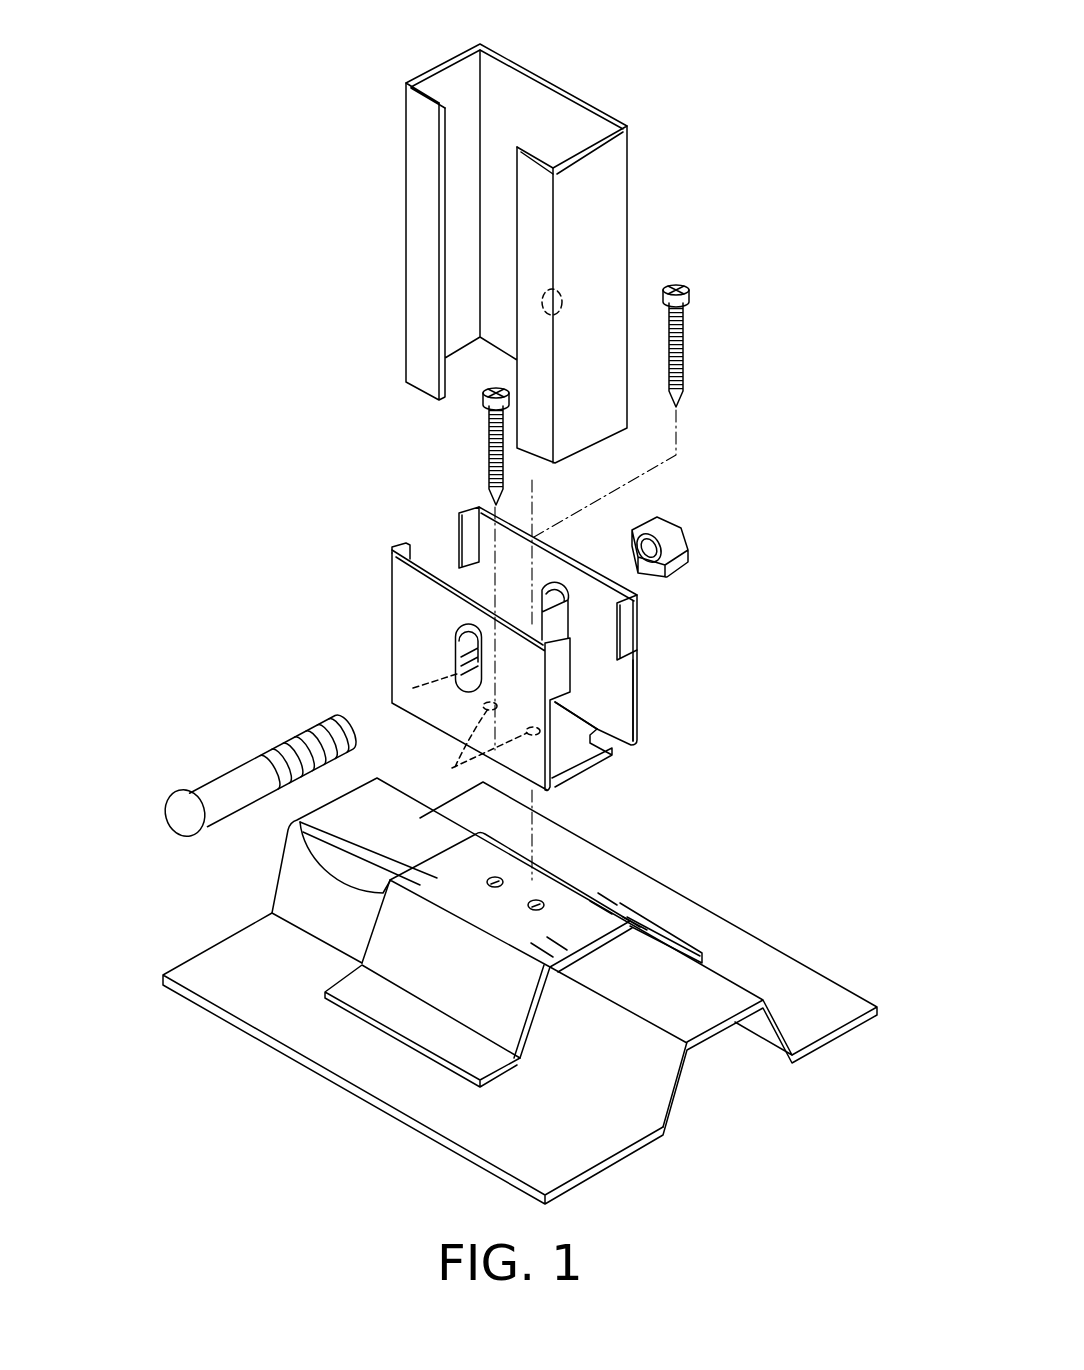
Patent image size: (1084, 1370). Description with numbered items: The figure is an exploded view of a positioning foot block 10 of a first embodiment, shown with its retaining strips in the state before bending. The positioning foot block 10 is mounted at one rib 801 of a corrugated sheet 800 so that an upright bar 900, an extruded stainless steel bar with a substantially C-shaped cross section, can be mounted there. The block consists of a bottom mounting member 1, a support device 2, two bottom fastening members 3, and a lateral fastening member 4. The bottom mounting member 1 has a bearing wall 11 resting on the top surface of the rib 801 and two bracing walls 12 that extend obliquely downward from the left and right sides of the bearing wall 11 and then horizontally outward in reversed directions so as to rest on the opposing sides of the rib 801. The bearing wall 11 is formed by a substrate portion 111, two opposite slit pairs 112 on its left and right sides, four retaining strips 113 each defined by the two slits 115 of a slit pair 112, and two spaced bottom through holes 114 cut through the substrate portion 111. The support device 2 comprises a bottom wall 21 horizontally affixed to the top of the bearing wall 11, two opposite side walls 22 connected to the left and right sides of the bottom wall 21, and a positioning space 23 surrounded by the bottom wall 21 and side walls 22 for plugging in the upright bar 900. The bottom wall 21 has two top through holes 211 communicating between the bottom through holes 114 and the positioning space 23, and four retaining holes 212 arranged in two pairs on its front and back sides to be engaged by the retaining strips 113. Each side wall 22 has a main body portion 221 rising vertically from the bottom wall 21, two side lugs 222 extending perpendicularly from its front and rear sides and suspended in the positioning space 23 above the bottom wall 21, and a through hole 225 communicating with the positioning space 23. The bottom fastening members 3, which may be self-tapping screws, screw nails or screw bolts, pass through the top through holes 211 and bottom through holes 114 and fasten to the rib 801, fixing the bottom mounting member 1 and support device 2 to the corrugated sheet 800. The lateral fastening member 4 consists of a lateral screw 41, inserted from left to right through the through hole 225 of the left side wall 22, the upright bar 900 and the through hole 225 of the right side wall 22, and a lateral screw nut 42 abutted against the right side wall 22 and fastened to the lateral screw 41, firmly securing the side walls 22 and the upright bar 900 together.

The bottom mounting member 1 is at (542, 953).
The bearing wall 11 is at (546, 850).
The substrate portion 111 is at (570, 886).
The slit pairs 112 is at (452, 824).
The retaining strips 113 is at (632, 918).
The bottom through holes 114 is at (488, 885).
The slits 115 is at (300, 820).
The bracing walls 12 is at (497, 1015).
The support device 2 is at (528, 645).
The bottom wall 21 is at (578, 731).
The top through holes 211 is at (471, 729).
The retaining holes 212 is at (566, 787).
The side walls 22 is at (531, 628).
The main body portion 221 is at (613, 680).
The side lugs 222 is at (467, 546).
The through hole 225 is at (551, 593).
The positioning space 23 is at (502, 575).
The bottom fastening members 3 is at (489, 441).
The lateral fastening member 4 is at (245, 773).
The lateral screw 41 is at (250, 777).
The lateral screw nut 42 is at (690, 542).
The positioning foot block 10 is at (328, 514).
The corrugated sheet 800 is at (493, 991).
The rib 801 is at (305, 880).
The upright bar 900 is at (415, 233).